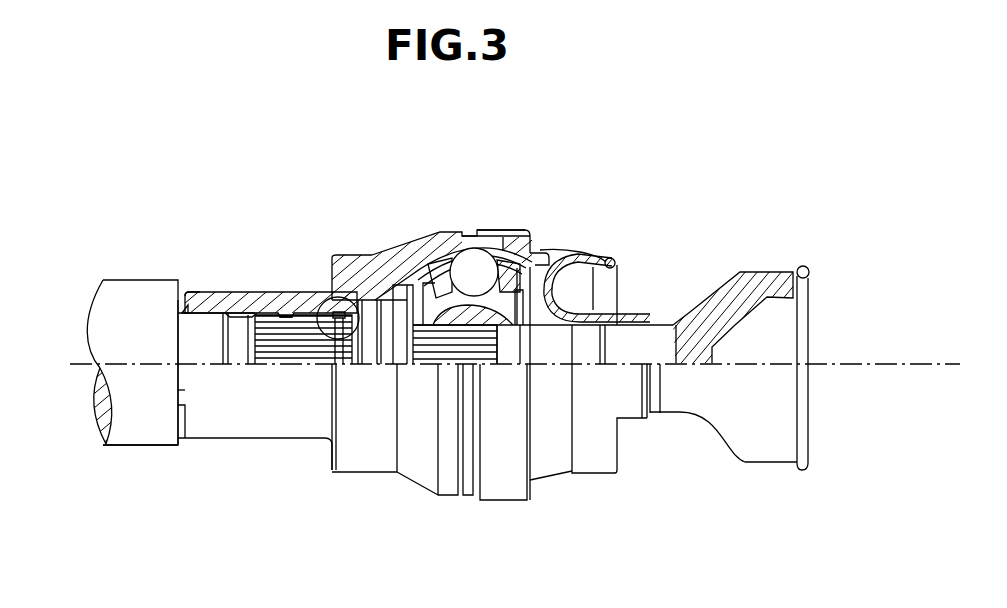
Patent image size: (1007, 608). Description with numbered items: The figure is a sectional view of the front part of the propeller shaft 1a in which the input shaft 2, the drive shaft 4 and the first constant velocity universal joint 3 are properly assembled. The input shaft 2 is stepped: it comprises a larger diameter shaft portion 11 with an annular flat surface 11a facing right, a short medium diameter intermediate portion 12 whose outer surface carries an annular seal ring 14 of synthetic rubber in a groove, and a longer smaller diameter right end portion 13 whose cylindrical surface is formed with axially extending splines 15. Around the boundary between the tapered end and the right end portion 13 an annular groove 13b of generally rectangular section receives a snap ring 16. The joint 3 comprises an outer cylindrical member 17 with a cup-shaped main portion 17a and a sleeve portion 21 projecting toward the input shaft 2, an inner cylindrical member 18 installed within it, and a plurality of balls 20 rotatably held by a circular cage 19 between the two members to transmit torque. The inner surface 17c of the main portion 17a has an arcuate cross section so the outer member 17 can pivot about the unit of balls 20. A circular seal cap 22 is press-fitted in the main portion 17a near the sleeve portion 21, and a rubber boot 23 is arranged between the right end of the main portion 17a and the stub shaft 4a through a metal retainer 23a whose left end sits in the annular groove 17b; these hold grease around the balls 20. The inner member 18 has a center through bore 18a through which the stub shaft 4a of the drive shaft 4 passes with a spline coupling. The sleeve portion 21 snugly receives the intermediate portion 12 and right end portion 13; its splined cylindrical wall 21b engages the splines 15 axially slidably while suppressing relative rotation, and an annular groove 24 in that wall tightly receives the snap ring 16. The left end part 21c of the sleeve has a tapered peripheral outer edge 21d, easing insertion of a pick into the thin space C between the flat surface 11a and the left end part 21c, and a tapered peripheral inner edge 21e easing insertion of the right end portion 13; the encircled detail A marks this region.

The propeller shaft 1a is at (708, 226).
The input shaft 2 is at (116, 271).
The first constant velocity universal joint 3 is at (470, 333).
The drive shaft 4 is at (757, 280).
The stub shaft 4a is at (558, 337).
The larger diameter shaft portion 11 is at (137, 443).
The annular flat surface 11a is at (183, 414).
The medium diameter intermediate portion 12 is at (206, 352).
The smaller diameter right end portion 13 is at (291, 342).
The annular groove 13b is at (330, 352).
The annular seal ring 14 is at (228, 330).
The splines 15 is at (316, 352).
The snap ring 16 is at (343, 342).
The outer cylindrical member 17 is at (428, 252).
The cup-shaped main portion 17a is at (400, 262).
The annular groove 17b is at (478, 245).
The inner surface 17c is at (487, 236).
The inner cylindrical member 18 is at (462, 312).
The center through bore 18a is at (470, 316).
The circular cage 19 is at (515, 236).
The balls 20 is at (465, 270).
The sleeve portion 21 is at (236, 291).
The splined cylindrical wall 21b is at (288, 313).
The left end part 21c is at (212, 291).
The peripheral outer edge 21d is at (186, 292).
The peripheral inner edge 21e is at (183, 304).
The circular seal cap 22 is at (378, 326).
The rubber boot 23 is at (565, 262).
The metal retainer 23a is at (545, 256).
The annular groove 24 is at (338, 313).
The detail region A is at (320, 294).
The thin space C is at (184, 392).